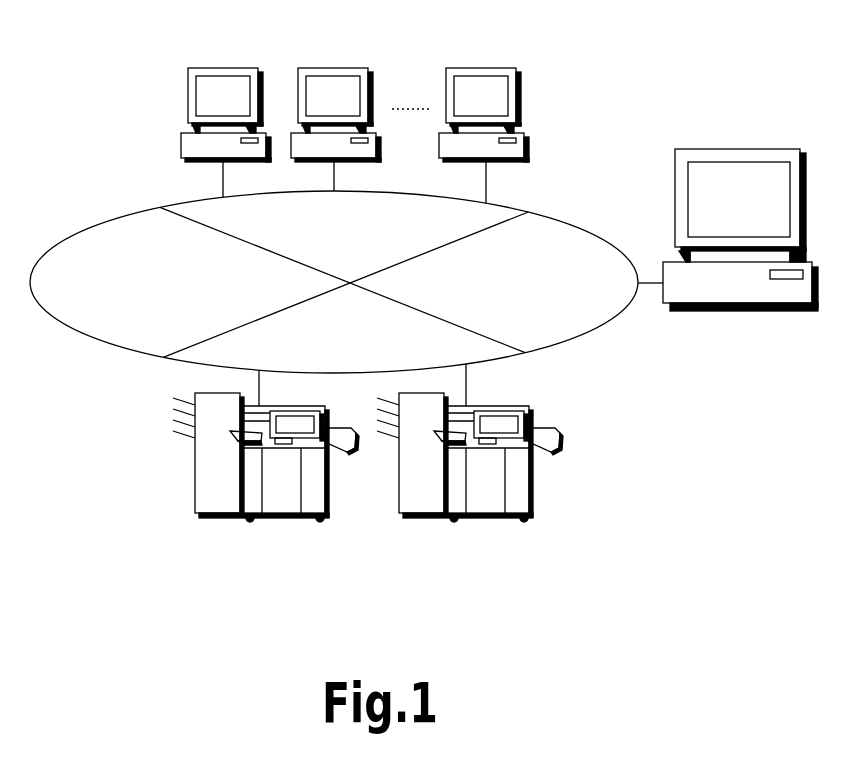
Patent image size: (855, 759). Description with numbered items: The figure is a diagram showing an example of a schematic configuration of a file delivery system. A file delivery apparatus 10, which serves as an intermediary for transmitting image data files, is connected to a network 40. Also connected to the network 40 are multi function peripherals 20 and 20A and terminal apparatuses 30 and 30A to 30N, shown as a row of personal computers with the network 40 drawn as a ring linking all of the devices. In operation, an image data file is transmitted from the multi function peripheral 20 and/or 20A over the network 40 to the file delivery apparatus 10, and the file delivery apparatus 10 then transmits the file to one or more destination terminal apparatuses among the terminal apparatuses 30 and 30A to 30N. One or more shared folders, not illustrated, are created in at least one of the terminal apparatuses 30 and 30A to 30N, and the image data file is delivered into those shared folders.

The file delivery apparatus 10 is at (755, 149).
The multi function peripheral 20 is at (322, 410).
The multi function peripheral 20A is at (527, 410).
The terminal apparatus 30 is at (258, 68).
The terminal apparatus 30A is at (368, 68).
The terminal apparatus 30N is at (518, 68).
The network 40 is at (543, 217).